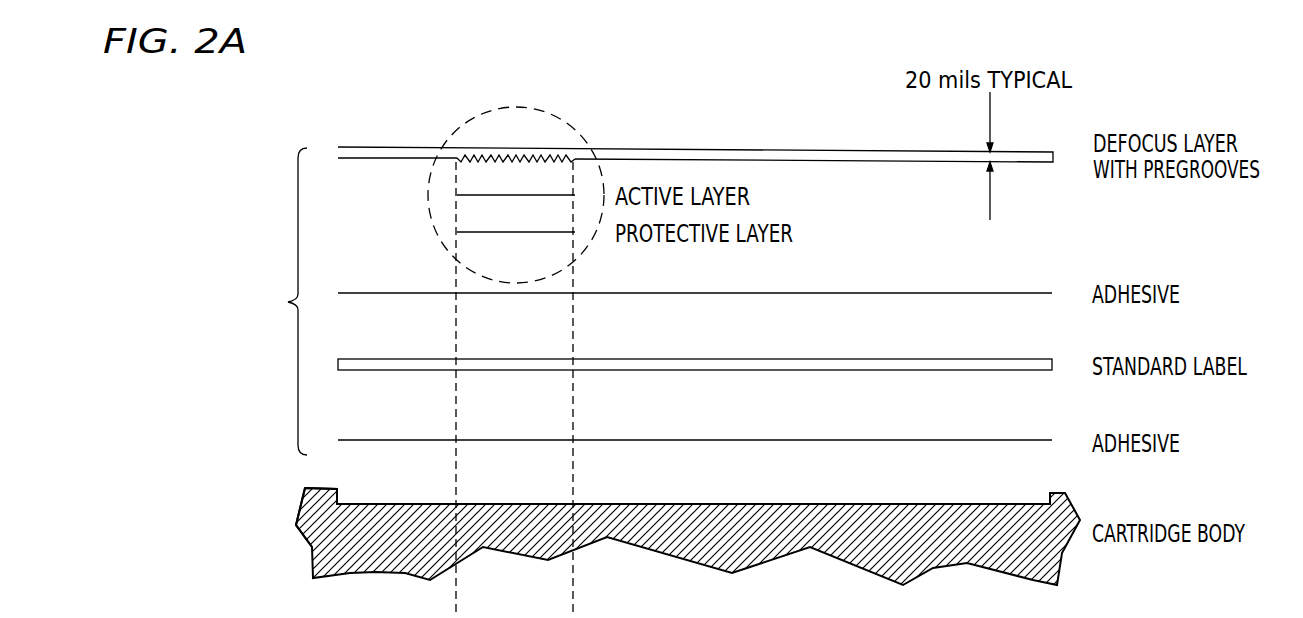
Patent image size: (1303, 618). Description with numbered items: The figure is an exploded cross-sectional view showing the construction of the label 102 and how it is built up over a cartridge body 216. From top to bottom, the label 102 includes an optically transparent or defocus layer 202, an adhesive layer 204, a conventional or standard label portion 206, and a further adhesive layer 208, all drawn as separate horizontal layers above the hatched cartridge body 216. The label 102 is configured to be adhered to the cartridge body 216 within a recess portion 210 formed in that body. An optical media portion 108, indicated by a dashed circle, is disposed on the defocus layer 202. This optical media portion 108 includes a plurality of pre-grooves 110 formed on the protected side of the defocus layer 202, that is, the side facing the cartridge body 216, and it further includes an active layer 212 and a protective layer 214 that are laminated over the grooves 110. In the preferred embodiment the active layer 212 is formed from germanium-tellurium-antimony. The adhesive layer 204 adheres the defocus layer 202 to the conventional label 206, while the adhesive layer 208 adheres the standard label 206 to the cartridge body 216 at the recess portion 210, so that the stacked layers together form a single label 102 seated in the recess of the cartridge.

The label 102 is at (217, 301).
The optical media portion 108 is at (438, 147).
The pre-grooves 110 is at (563, 151).
The defocus layer 202 is at (768, 150).
The adhesive layer 204 is at (886, 293).
The conventional label portion 206 is at (862, 359).
The adhesive layer 208 is at (857, 440).
The recess portion 210 is at (725, 503).
The active layer 212 is at (458, 195).
The protective layer 214 is at (472, 233).
The cartridge body 216 is at (300, 508).